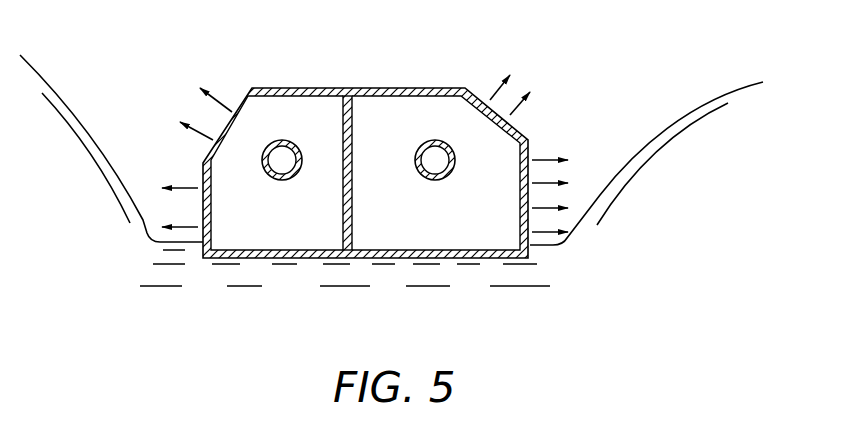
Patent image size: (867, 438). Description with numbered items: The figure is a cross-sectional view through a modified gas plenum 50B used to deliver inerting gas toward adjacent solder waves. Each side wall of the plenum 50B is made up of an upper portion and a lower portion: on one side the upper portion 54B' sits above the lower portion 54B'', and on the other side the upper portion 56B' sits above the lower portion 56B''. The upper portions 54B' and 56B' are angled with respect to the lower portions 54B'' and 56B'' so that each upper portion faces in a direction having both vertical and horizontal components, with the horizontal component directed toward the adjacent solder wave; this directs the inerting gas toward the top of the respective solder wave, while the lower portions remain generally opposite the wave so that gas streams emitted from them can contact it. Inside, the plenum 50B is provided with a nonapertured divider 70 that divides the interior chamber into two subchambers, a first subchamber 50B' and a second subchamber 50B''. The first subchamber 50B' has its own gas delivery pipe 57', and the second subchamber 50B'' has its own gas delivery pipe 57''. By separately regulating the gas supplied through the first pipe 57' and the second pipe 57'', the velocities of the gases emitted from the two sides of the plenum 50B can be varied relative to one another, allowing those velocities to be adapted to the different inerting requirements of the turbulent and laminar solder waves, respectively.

The plenum 50B is at (366, 135).
The subchamber 50B' is at (289, 143).
The subchamber 50B'' is at (436, 143).
The upper portion of side wall 54B' is at (205, 81).
The lower portion of side wall 54B'' is at (112, 207).
The upper portion of side wall 56B' is at (560, 92).
The lower portion of side wall 56B'' is at (581, 175).
The gas delivery pipe 57' is at (282, 189).
The gas delivery pipe 57'' is at (437, 190).
The nonapertured divider 70 is at (353, 230).